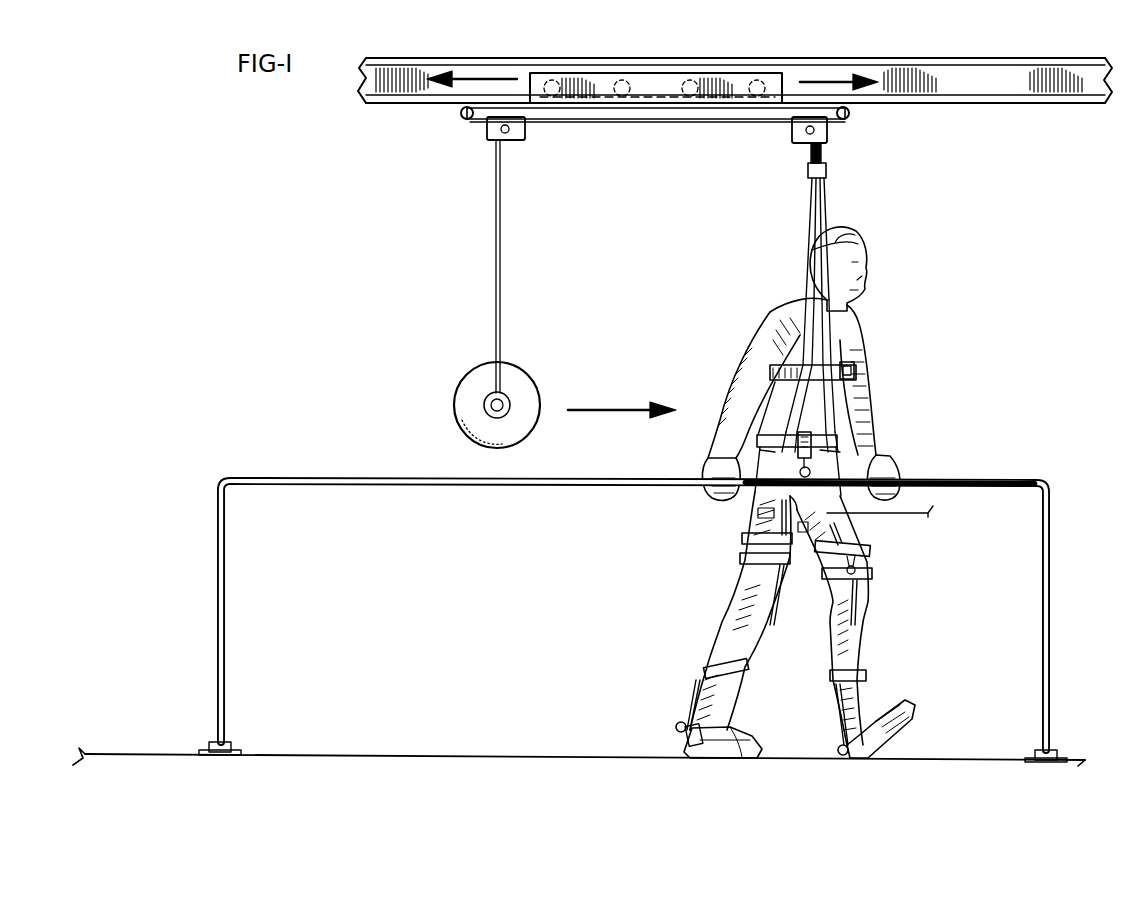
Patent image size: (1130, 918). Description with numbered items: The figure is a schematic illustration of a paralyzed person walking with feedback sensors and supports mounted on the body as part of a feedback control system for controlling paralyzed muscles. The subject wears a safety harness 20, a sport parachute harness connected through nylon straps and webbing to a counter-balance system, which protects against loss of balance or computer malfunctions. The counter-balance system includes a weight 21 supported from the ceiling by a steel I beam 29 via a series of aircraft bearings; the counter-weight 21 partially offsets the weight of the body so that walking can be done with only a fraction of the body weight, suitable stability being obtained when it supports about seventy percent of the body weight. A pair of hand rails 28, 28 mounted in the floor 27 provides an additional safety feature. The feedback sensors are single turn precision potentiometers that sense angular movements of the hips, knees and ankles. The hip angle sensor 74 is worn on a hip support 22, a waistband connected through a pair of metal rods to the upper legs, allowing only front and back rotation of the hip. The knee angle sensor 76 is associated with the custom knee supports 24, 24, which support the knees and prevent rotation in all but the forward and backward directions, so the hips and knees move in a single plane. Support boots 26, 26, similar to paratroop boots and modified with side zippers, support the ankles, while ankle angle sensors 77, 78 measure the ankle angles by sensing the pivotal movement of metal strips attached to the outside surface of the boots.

The safety harness 20 is at (802, 291).
The counter-weight 21 is at (530, 387).
The hip support 22 is at (808, 410).
The knee support 24 is at (875, 592).
The support boot 26 is at (698, 691).
The floor 27 is at (573, 753).
The hand rail 28 is at (610, 487).
The steel I beam 29 is at (972, 104).
The hip angle sensor 74 is at (833, 440).
The knee angle sensor 76 is at (872, 562).
The ankle angle sensor 77 is at (677, 727).
The ankle angle sensor 78 is at (838, 751).